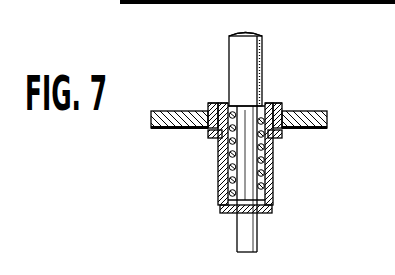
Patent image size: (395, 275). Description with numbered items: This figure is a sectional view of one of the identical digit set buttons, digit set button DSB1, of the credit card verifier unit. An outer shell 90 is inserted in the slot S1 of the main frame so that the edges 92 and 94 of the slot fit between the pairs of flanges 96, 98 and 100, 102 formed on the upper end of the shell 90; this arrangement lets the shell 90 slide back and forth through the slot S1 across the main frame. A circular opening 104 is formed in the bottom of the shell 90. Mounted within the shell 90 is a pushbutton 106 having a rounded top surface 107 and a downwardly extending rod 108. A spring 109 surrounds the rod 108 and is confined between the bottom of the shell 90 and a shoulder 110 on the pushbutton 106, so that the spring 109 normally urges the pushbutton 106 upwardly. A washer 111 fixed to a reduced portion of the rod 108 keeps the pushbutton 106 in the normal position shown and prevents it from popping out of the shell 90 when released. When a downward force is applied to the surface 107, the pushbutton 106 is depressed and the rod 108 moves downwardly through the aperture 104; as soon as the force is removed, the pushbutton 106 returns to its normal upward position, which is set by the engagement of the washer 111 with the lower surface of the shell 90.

The outer shell 90 is at (273, 160).
The edge of the slot 92 is at (182, 128).
The edge of the slot 94 is at (290, 113).
The flange 96 is at (213, 103).
The flange 98 is at (210, 136).
The flange 100 is at (273, 105).
The flange 102 is at (282, 135).
The circular opening 104 is at (262, 214).
The pushbutton 106 is at (263, 48).
The rounded top surface 107 is at (255, 33).
The rod 108 is at (250, 189).
The spring 109 is at (223, 185).
The shoulder 110 is at (259, 88).
The washer 111 is at (232, 214).
The slot S1 is at (215, 95).
The digit set button DSB1 is at (287, 73).